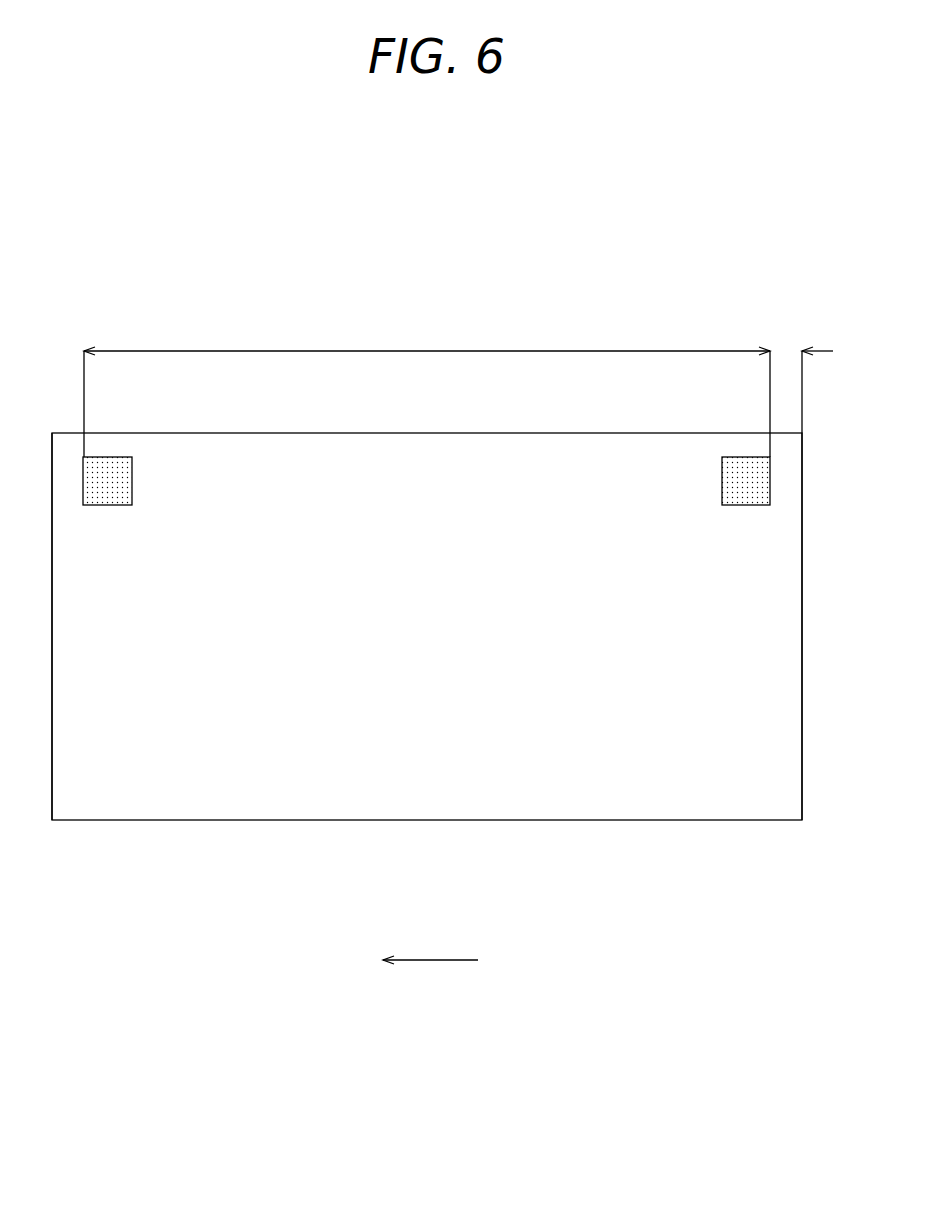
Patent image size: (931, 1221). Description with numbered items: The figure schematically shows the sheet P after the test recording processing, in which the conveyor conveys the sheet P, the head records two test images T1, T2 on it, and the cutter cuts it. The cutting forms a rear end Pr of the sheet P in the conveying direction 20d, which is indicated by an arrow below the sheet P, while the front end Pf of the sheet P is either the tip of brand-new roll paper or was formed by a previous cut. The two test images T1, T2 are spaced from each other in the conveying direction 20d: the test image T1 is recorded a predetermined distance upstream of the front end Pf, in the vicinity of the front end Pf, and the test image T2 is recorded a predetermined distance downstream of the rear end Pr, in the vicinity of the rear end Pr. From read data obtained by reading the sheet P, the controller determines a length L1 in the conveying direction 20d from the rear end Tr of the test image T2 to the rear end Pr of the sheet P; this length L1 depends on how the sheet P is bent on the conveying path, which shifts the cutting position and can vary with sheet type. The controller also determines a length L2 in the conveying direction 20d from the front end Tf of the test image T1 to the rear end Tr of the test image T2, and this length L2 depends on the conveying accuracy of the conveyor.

The sheet P is at (428, 820).
The test image T1 is at (127, 482).
The test image T2 is at (725, 482).
The front end of the test image T1 Tf is at (84, 508).
The rear end of the test image T2 Tr is at (770, 508).
The front end of the sheet Pf is at (52, 822).
The rear end of the sheet Pr is at (802, 822).
The length L1 is at (802, 375).
The length L2 is at (427, 375).
The conveying direction 20d is at (440, 960).